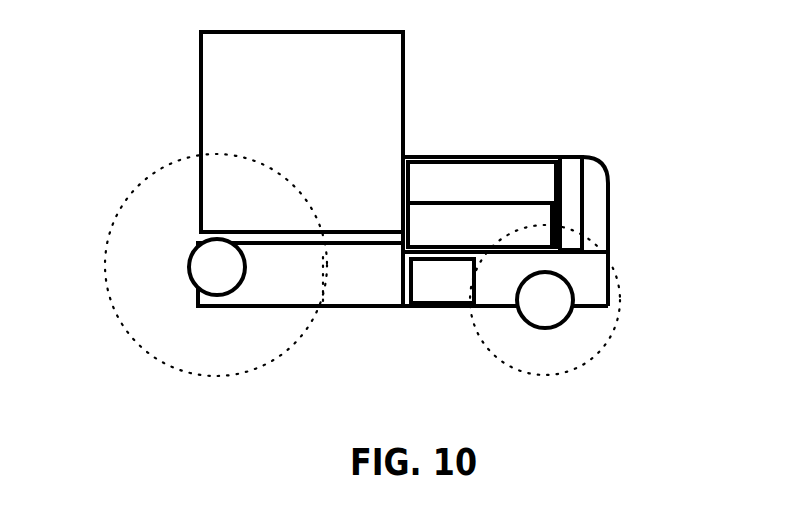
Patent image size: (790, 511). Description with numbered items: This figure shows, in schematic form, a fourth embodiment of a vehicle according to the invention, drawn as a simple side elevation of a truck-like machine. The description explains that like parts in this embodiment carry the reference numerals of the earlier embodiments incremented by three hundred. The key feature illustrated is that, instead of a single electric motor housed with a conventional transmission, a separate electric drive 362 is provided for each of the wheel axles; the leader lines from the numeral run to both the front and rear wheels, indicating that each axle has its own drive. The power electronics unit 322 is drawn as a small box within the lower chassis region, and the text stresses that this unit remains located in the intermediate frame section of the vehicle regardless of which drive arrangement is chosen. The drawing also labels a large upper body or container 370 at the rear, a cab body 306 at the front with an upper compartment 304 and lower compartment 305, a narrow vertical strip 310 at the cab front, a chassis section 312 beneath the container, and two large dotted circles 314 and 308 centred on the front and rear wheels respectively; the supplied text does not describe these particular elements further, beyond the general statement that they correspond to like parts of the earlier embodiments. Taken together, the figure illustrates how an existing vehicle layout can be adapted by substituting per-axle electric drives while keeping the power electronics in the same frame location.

The cargo container 370 is at (308, 81).
The cab body 306 is at (593, 272).
The chassis section 312 is at (382, 290).
The cab upper compartment 304 is at (485, 195).
The cab lower compartment 305 is at (408, 256).
The door pillar strip 310 is at (572, 180).
The power electronics unit 322 is at (462, 292).
The separate electric drive 362 is at (225, 268).
The front sensing zone 314 is at (130, 318).
The rear sensing zone 308 is at (600, 330).